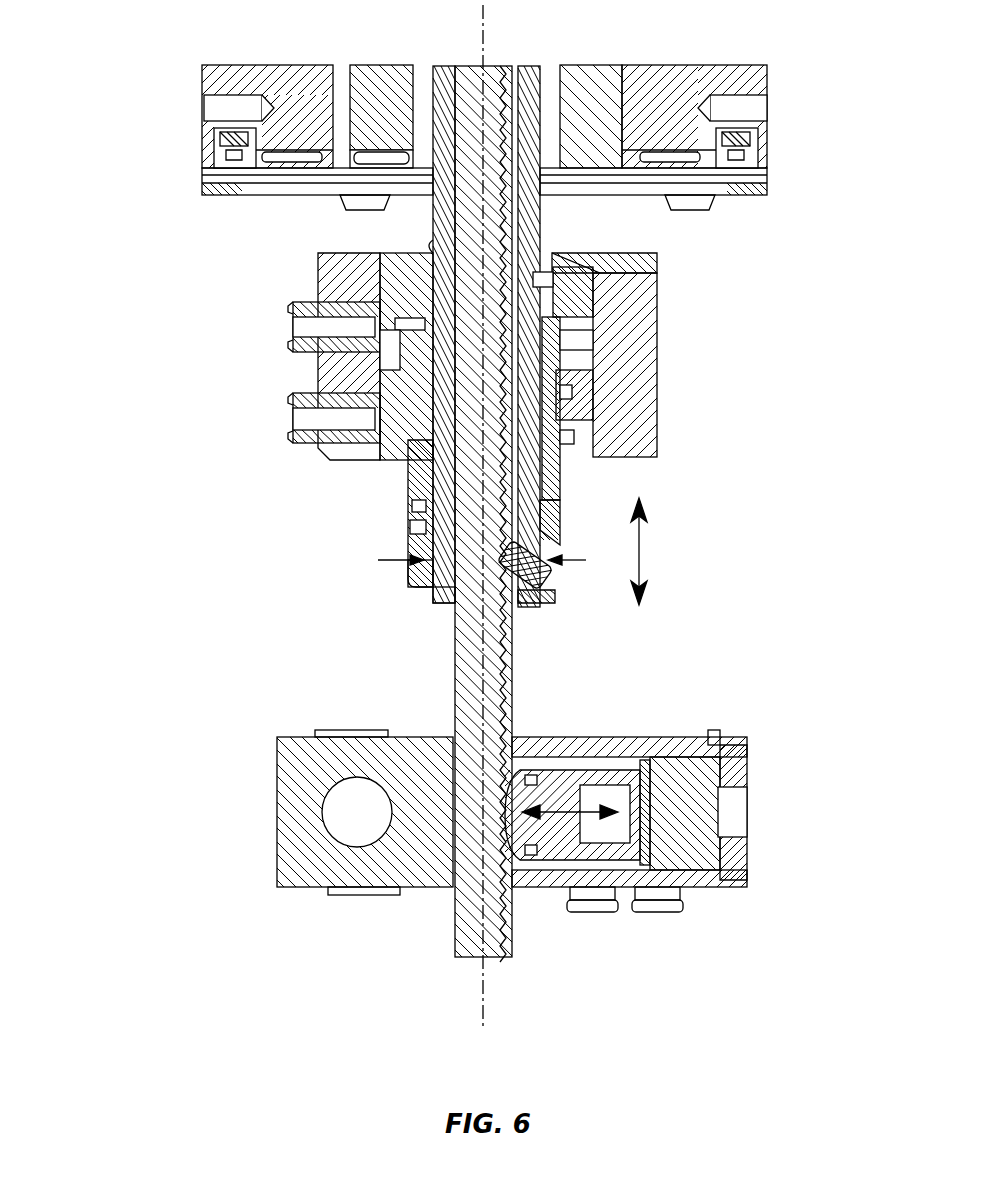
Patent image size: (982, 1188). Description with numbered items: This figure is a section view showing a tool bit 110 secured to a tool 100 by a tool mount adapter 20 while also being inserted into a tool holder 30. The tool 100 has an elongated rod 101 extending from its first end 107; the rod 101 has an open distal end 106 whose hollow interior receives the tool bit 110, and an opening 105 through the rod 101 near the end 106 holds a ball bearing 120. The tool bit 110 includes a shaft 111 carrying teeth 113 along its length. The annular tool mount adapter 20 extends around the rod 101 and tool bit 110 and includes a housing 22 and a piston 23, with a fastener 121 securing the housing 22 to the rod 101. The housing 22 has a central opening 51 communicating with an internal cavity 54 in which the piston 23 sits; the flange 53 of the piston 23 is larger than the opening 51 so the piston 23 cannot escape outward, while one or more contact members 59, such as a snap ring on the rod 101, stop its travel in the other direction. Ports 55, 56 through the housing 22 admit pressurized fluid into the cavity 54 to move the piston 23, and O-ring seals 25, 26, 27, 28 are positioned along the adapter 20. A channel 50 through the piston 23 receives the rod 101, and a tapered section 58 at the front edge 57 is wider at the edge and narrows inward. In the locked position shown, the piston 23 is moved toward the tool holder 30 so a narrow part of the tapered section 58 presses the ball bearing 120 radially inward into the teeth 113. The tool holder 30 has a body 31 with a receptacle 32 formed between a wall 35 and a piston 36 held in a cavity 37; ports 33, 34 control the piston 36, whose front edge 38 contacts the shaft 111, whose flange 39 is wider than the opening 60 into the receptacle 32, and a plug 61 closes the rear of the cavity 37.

The tool 100 is at (432, 152).
The elongated rod 101 is at (532, 205).
The first end 107 is at (724, 198).
The tool bit 110 is at (490, 105).
The teeth 113 is at (522, 661).
The shaft 111 is at (452, 745).
The open distal end 106 is at (445, 606).
The ball bearing 120 is at (535, 592).
The opening 105 is at (548, 520).
The tool mount adapter 20 is at (433, 437).
The housing 22 is at (658, 340).
The piston 23 is at (408, 478).
The O-ring seal 25 is at (598, 298).
The O-ring seal 26 is at (574, 440).
The O-ring seal 27 is at (588, 392).
The O-ring seal 28 is at (410, 503).
The channel 50 is at (425, 590).
The central opening 51 is at (565, 470).
The flange 53 is at (372, 375).
The cavity 54 is at (585, 377).
The port 55 is at (300, 338).
The port 56 is at (300, 428).
The front edge 57 is at (546, 586).
The tapered section 58 is at (410, 527).
The contact member 59 is at (408, 323).
The fastener 121 is at (652, 268).
The tool holder 30 is at (467, 823).
The body 31 is at (339, 813).
The receptacle 32 is at (452, 752).
The port 33 is at (600, 914).
The port 34 is at (662, 914).
The wall 35 is at (452, 770).
The piston 36 is at (600, 755).
The cavity 37 is at (572, 772).
The front edge 38 is at (514, 905).
The flange 39 is at (645, 760).
The opening 60 is at (516, 768).
The plug 61 is at (750, 765).